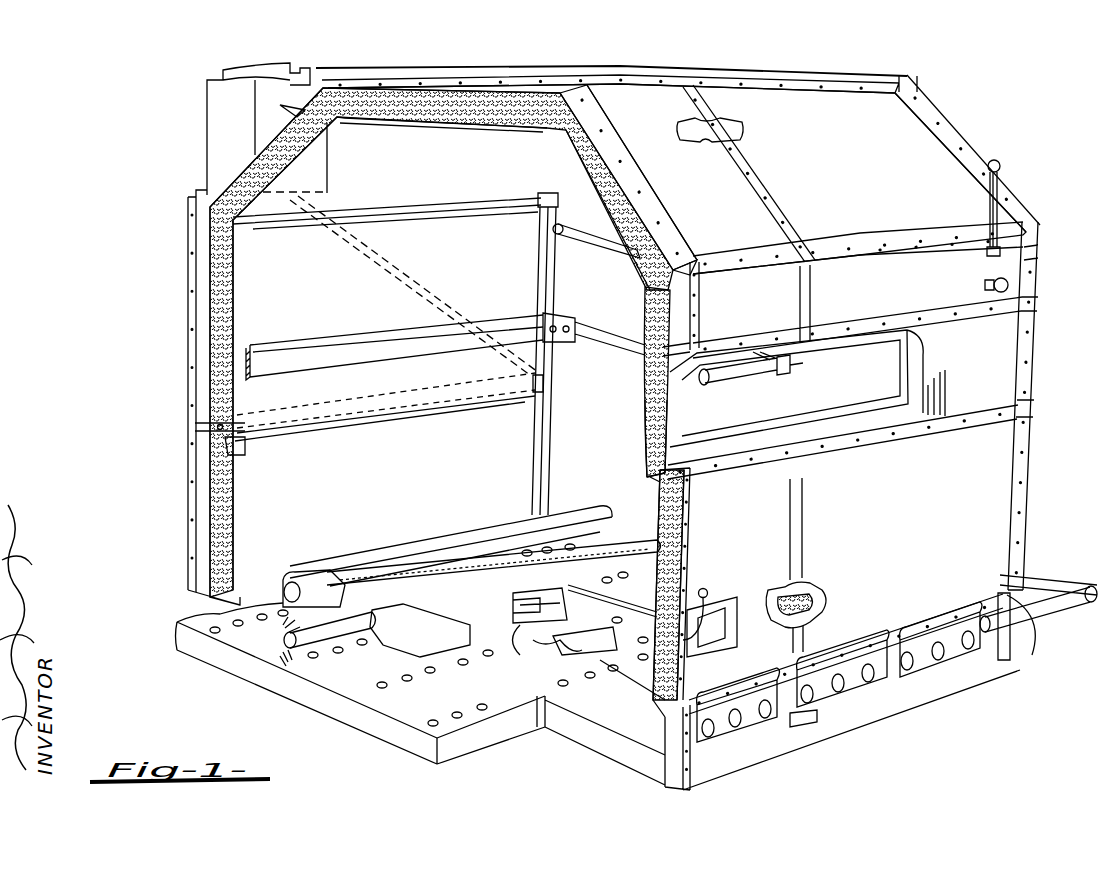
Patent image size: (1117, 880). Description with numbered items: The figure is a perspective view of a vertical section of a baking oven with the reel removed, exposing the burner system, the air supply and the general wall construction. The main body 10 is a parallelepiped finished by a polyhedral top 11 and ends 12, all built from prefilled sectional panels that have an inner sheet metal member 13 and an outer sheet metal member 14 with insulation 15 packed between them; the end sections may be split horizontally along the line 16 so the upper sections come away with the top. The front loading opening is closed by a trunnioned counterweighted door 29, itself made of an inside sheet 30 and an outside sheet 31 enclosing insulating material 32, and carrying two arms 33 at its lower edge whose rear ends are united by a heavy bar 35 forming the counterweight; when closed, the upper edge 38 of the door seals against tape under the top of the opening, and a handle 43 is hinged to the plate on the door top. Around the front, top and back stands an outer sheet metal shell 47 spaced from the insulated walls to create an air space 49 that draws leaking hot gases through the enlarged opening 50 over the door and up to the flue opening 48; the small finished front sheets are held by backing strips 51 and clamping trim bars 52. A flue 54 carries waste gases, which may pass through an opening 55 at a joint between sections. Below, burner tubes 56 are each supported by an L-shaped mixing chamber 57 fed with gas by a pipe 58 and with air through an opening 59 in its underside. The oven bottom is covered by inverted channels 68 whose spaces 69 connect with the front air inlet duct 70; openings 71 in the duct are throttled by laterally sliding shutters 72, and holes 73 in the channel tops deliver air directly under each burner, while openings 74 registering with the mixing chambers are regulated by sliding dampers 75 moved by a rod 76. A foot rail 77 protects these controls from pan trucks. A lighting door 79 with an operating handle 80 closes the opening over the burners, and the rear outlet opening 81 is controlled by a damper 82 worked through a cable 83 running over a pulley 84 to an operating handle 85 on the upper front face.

The main body 10 is at (185, 360).
The polyhedral top 11 is at (407, 62).
The ends 12 is at (568, 457).
The inner sheet metal member 13 is at (453, 127).
The outer sheet metal member 14 is at (507, 95).
The insulation 15 is at (507, 128).
The split line 16 is at (608, 258).
The counterweighted door 29 is at (638, 404).
The inside sheet 30 is at (650, 423).
The outside sheet 31 is at (645, 448).
The insulating material 32 is at (648, 460).
The arms 33 is at (592, 340).
The heavy bar 35 is at (327, 353).
The upper edge 38 is at (645, 357).
The handle 43 is at (700, 375).
The outer sheet metal shell 47 is at (566, 52).
The flue opening 48 is at (257, 73).
The air space 49 is at (527, 92).
The enlarged opening 50 is at (680, 297).
The backing strips 51 is at (748, 138).
The trim bar 52 is at (747, 168).
The flue 54 is at (198, 240).
The opening 55 is at (217, 430).
The burner tubes 56 is at (518, 577).
The mixing chamber 57 is at (376, 613).
The gas pipe 58 is at (513, 573).
The air opening 59 is at (543, 630).
The inverted channels 68 is at (433, 745).
The spaces 69 is at (257, 573).
The air inlet duct 70 is at (670, 768).
The openings 71 is at (770, 717).
The shutters 72 is at (743, 697).
The holes 73 is at (303, 650).
The openings 74 is at (627, 657).
The sliding dampers 75 is at (597, 650).
The rod 76 is at (813, 723).
The foot rail 77 is at (1050, 610).
The door 79 is at (653, 640).
The operating handle 80 is at (707, 594).
The opening 81 is at (240, 452).
The damper 82 is at (360, 430).
The cable 83 is at (551, 273).
The pulley 84 is at (558, 233).
The operating handle 85 is at (1008, 283).